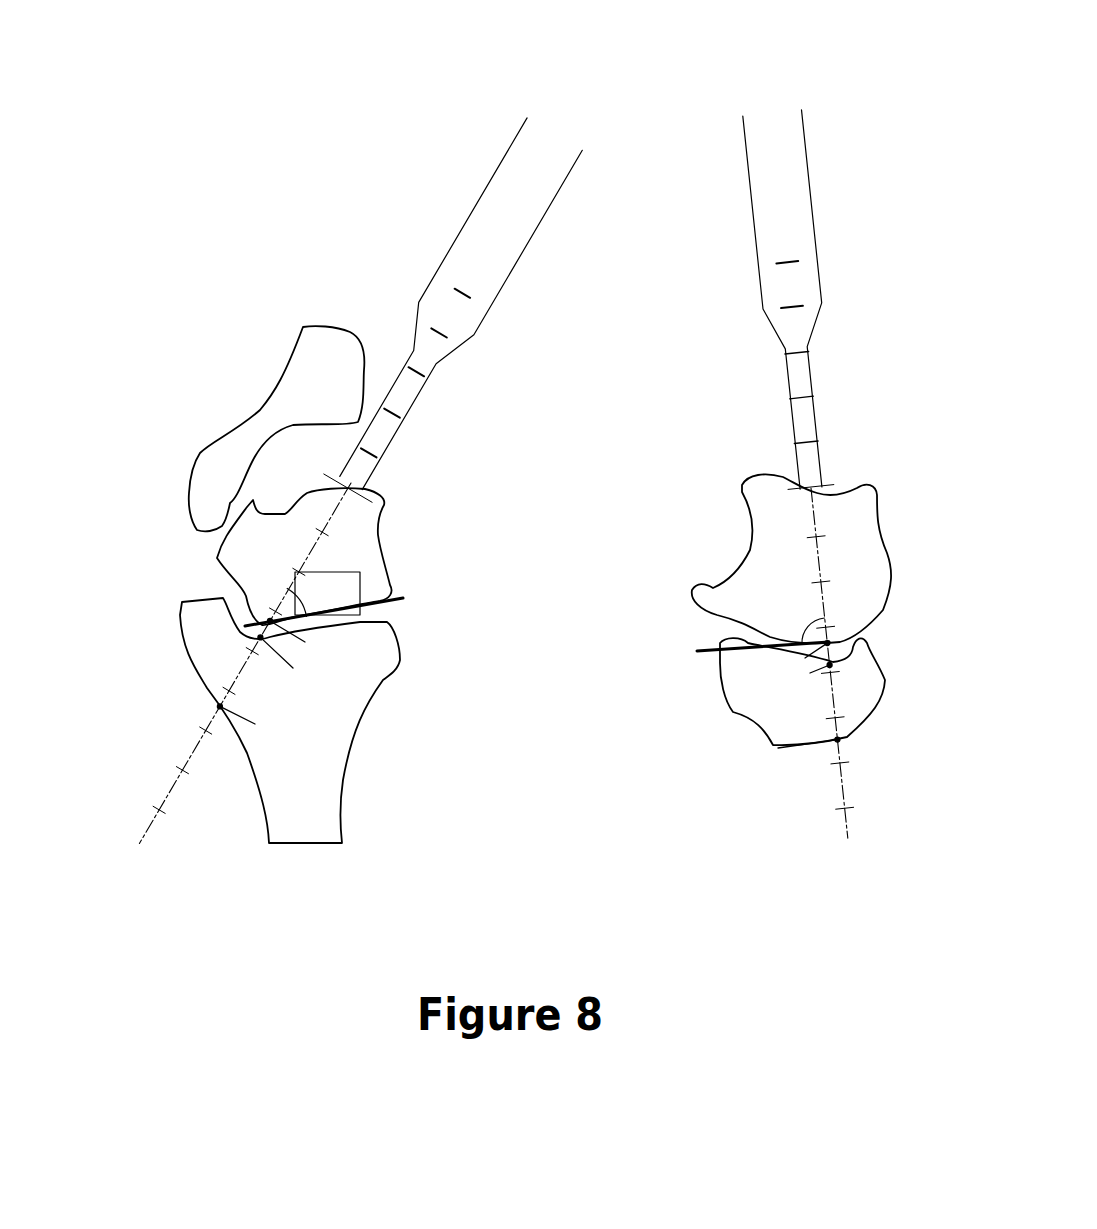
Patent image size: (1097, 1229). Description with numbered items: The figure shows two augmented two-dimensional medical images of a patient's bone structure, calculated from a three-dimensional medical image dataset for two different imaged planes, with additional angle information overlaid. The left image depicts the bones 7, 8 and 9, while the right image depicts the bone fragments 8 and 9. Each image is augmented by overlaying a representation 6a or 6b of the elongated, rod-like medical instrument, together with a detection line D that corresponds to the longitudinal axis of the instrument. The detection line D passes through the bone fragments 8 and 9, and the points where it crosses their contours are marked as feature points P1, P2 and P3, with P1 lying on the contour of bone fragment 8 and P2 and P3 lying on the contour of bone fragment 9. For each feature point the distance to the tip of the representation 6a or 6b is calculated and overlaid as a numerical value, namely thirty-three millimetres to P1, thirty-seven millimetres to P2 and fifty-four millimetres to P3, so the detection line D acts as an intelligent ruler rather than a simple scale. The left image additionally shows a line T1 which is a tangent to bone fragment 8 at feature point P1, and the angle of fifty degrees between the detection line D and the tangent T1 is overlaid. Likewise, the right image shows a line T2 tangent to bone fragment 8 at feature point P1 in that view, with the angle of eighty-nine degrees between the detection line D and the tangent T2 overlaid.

The representation 6a is at (517, 140).
The representation 6b is at (748, 140).
The bone 7 is at (285, 375).
The bone fragment 8 is at (233, 530).
The bone fragment 9 is at (183, 653).
The detection line D is at (335, 508).
The feature point P1 is at (270, 621).
The feature point P2 is at (260, 637).
The feature point P3 is at (220, 706).
The tangent T1 is at (397, 602).
The tangent T2 is at (702, 648).